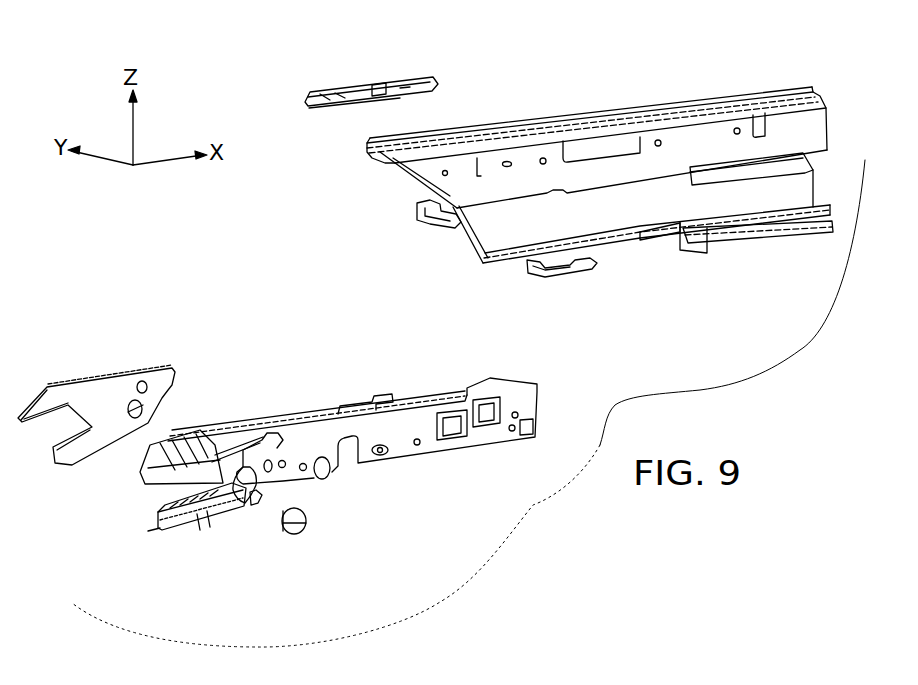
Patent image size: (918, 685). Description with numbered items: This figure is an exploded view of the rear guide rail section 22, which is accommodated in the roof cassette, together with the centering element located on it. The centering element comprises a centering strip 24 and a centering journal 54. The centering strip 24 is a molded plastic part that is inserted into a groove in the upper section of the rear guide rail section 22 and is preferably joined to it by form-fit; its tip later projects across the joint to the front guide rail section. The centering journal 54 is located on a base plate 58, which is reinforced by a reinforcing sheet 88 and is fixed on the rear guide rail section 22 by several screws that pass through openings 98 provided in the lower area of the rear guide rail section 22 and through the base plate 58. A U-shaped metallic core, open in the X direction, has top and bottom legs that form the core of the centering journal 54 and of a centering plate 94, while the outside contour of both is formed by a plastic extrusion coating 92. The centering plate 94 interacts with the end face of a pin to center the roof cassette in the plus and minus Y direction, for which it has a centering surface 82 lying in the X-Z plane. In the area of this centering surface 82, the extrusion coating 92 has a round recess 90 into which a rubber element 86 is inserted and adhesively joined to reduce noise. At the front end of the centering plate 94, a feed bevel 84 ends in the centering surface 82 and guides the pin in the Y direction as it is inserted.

The rear guide rail section 22 is at (770, 100).
The centering strip 24 is at (355, 90).
The centering journal 54 is at (144, 486).
The base plate 58 is at (400, 442).
The centering surface 82 is at (212, 530).
The feed bevel 84 is at (184, 532).
The rubber element 86 is at (300, 530).
The reinforcing sheet 88 is at (58, 395).
The round recess 90 is at (257, 500).
The plastic extrusion coating 92 is at (240, 505).
The centering plate 94 is at (152, 531).
The openings 98 is at (577, 278).